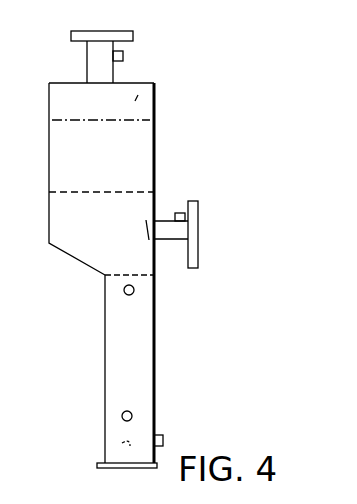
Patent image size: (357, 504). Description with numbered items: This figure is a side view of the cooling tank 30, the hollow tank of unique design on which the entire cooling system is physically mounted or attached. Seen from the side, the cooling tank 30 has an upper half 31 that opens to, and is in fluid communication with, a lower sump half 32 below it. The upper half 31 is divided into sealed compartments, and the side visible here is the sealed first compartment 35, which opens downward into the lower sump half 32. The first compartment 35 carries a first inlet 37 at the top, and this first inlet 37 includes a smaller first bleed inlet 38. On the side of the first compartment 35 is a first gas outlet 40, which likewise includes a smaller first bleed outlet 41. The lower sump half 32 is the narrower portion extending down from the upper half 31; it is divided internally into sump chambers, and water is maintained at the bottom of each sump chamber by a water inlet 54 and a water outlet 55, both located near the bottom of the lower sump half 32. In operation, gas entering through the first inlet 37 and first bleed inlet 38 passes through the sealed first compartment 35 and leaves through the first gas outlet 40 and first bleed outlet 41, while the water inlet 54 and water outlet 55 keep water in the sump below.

The cooling tank 30 is at (182, 82).
The upper half 31 is at (170, 162).
The lower sump half 32 is at (160, 357).
The first compartment 35 is at (135, 103).
The first inlet 37 is at (118, 33).
The first bleed inlet 38 is at (117, 55).
The first gas outlet 40 is at (202, 223).
The first bleed outlet 41 is at (178, 210).
The water inlet 54 is at (122, 443).
The water outlet 55 is at (163, 440).